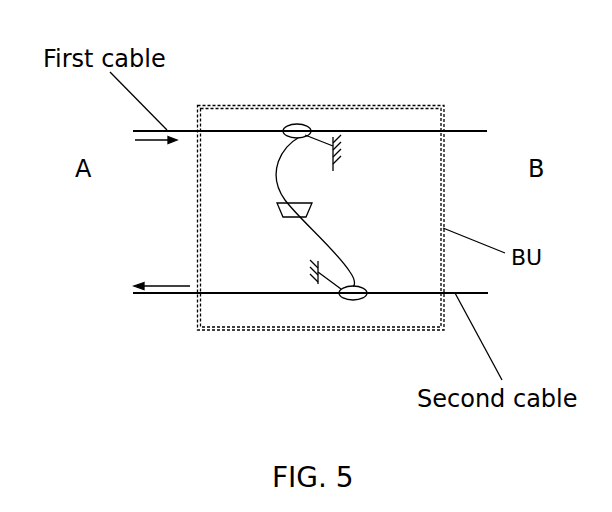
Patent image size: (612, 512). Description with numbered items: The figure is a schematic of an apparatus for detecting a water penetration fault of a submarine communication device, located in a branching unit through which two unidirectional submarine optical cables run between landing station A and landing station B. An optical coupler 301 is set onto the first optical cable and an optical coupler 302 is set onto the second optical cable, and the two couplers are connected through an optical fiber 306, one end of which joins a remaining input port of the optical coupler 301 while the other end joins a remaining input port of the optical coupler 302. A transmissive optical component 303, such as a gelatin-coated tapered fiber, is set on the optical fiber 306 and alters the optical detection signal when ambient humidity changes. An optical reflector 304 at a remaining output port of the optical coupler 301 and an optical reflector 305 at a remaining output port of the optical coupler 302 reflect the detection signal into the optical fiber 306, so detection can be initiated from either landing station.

The optical coupler 301 is at (297, 126).
The optical coupler 302 is at (352, 301).
The transmissive optical component 303 is at (278, 211).
The optical reflector 304 is at (334, 145).
The optical reflector 305 is at (318, 273).
The optical fiber 306 is at (277, 173).